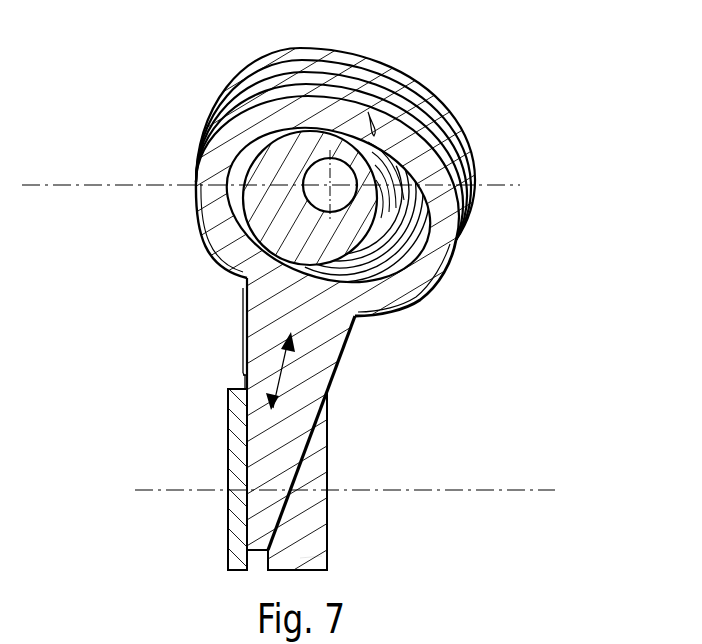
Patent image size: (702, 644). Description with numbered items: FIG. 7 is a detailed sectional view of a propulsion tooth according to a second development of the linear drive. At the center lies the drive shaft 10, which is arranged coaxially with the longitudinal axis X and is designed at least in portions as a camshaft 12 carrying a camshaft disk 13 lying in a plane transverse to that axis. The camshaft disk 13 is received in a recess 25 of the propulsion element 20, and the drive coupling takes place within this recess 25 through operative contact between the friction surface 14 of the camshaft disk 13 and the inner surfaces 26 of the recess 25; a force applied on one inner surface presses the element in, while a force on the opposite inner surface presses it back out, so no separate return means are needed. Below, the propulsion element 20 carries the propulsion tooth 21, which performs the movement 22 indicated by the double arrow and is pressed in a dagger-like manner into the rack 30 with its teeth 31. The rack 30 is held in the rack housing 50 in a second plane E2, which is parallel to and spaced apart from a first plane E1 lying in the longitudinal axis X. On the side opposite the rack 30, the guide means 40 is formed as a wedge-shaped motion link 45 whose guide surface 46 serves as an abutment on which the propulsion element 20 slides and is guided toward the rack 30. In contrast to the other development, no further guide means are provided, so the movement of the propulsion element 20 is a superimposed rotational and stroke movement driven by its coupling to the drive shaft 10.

The drive shaft 10 is at (258, 128).
The camshaft 12 is at (249, 197).
The camshaft disk 13 is at (242, 176).
The friction surface 14 is at (380, 157).
The propulsion element 20 is at (394, 331).
The propulsion tooth 21 is at (268, 470).
The movement 22 is at (245, 380).
The recess 25 is at (387, 100).
The inner surfaces 26 is at (370, 120).
The rack 30 is at (146, 522).
The teeth 31 is at (247, 494).
The guide means 40 is at (305, 556).
The motion link 45 is at (450, 262).
The guide surface 46 is at (232, 100).
The rack housing 50 is at (228, 442).
The longitudinal axis X is at (326, 181).
The first plane E1 is at (513, 186).
The second plane E2 is at (495, 492).